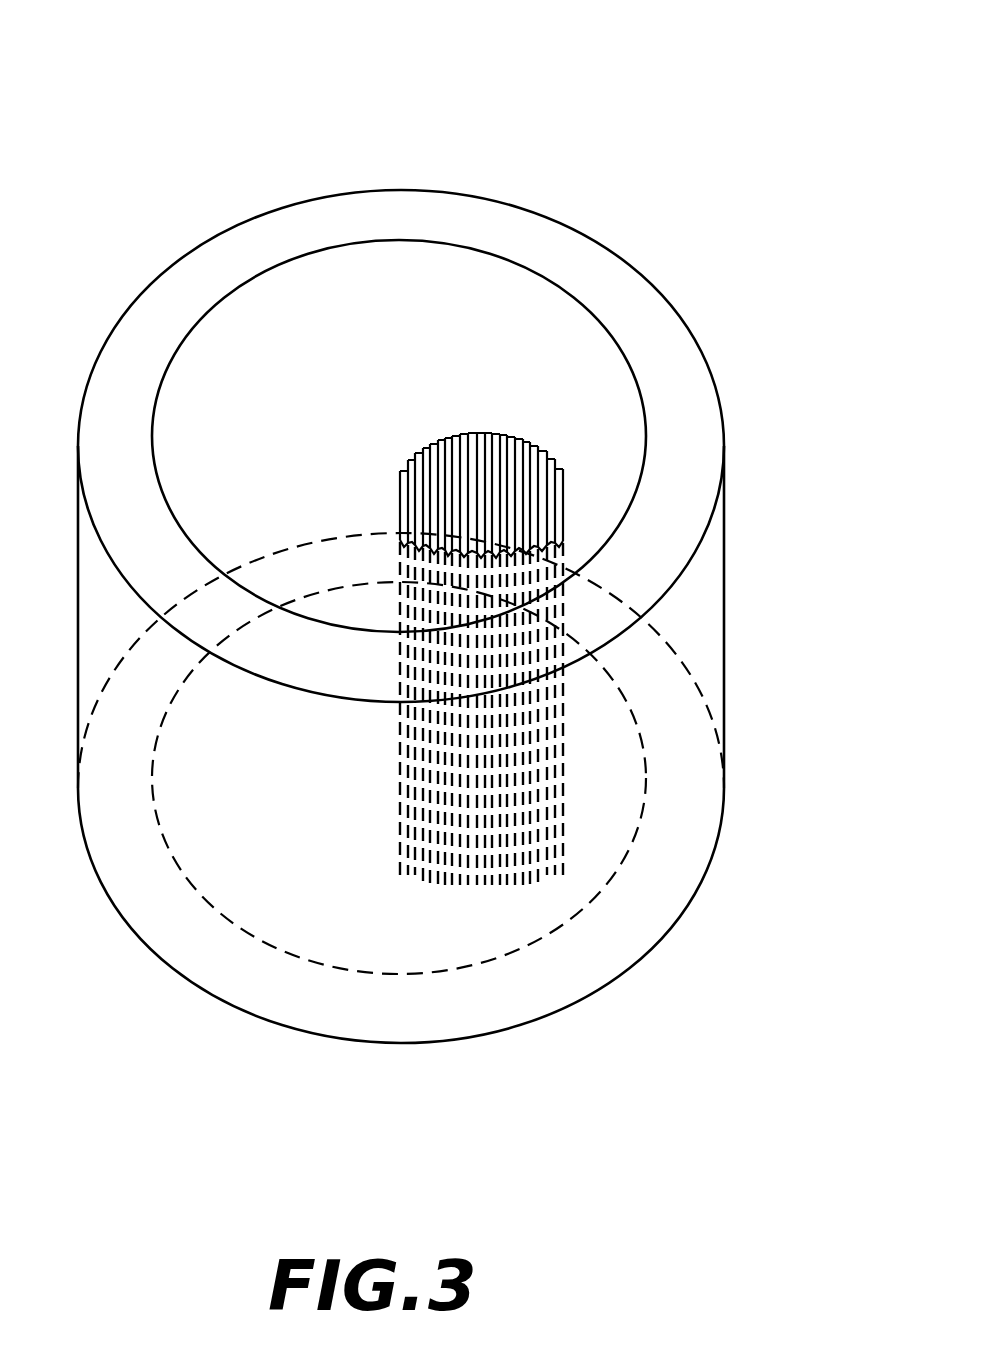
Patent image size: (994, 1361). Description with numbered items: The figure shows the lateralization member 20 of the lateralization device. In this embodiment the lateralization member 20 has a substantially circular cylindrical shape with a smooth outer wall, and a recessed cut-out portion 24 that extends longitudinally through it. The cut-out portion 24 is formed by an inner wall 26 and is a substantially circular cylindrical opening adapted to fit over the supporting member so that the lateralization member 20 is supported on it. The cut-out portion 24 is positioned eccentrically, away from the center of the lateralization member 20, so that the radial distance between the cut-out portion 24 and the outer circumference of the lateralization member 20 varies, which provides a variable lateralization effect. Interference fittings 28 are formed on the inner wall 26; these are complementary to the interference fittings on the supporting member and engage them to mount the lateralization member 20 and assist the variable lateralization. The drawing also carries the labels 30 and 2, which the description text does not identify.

The assembly 20 is at (700, 148).
The outer ring 30 is at (355, 212).
The bore 2 is at (458, 273).
The splined hub 24 is at (498, 447).
The spline teeth 26 is at (480, 505).
The end face 28 is at (418, 462).